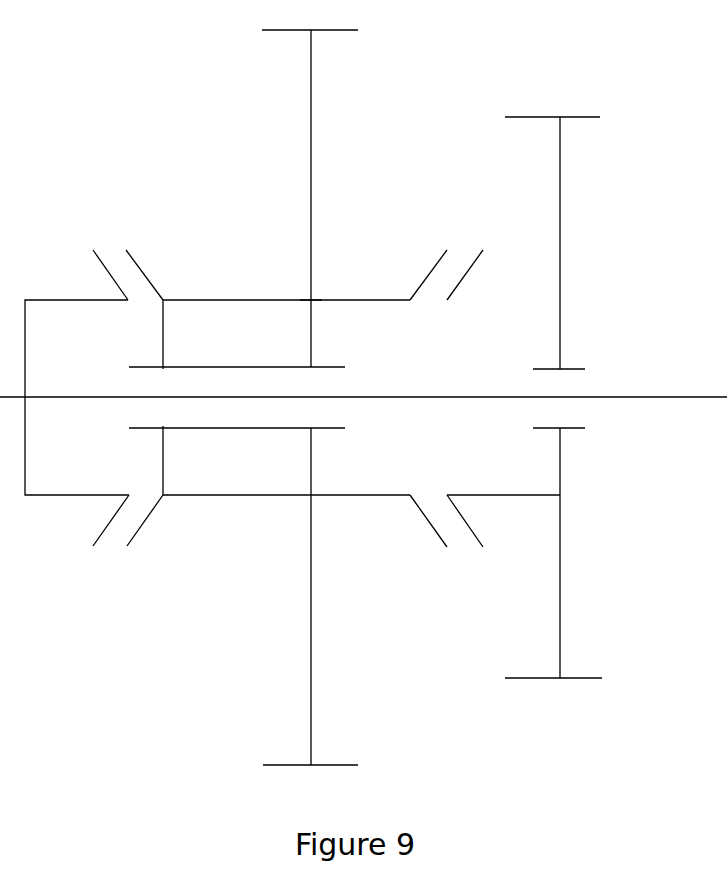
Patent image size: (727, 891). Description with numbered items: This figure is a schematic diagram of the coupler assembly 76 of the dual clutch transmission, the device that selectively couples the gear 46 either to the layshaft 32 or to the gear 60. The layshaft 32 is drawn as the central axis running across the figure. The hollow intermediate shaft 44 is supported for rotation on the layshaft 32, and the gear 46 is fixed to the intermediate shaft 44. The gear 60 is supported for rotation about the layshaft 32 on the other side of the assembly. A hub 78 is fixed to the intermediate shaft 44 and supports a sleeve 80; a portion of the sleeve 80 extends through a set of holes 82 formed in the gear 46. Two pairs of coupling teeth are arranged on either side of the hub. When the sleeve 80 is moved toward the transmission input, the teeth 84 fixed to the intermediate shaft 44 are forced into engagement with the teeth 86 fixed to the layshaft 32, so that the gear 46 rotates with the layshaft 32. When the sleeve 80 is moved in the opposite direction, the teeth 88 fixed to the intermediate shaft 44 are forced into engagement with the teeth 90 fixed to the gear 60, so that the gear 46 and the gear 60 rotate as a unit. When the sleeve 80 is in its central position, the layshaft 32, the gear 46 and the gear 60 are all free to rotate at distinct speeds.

The layshaft 32 is at (683, 397).
The hollow intermediate shaft 44 is at (180, 429).
The gear 46 is at (311, 629).
The gear 60 is at (560, 566).
The coupler assembly 76 is at (286, 500).
The hub 78 is at (163, 333).
The sleeve 80 is at (233, 300).
The holes 82 is at (330, 290).
The teeth 84 is at (142, 270).
The teeth 86 is at (104, 268).
The teeth 88 is at (427, 275).
The teeth 90 is at (465, 282).